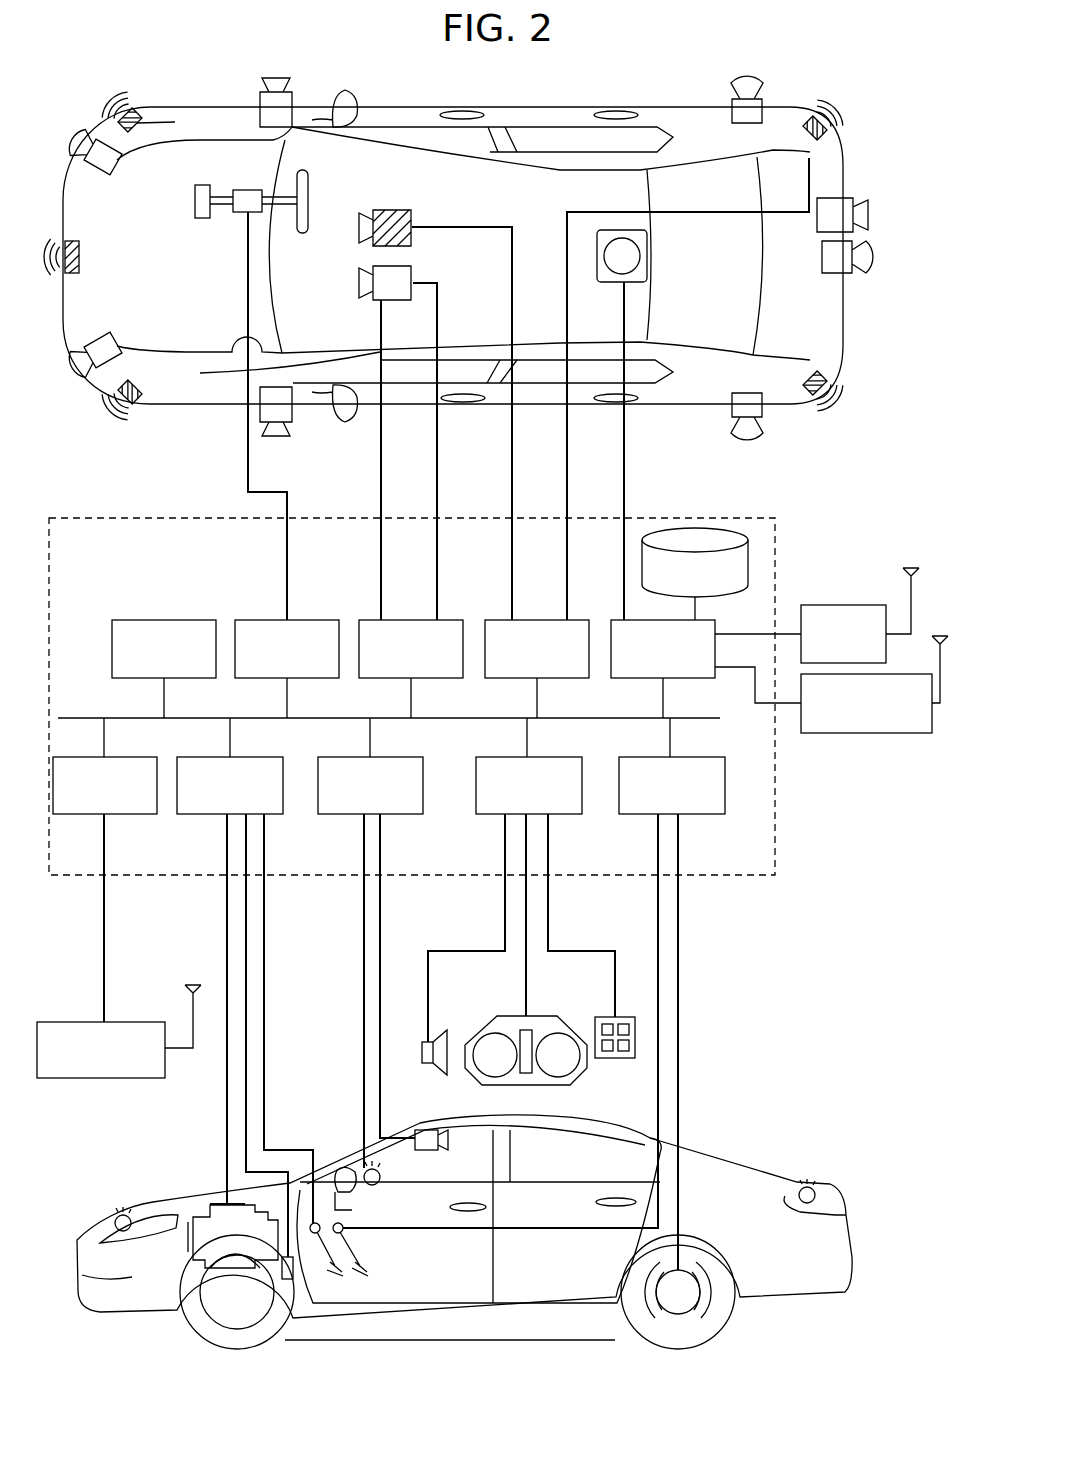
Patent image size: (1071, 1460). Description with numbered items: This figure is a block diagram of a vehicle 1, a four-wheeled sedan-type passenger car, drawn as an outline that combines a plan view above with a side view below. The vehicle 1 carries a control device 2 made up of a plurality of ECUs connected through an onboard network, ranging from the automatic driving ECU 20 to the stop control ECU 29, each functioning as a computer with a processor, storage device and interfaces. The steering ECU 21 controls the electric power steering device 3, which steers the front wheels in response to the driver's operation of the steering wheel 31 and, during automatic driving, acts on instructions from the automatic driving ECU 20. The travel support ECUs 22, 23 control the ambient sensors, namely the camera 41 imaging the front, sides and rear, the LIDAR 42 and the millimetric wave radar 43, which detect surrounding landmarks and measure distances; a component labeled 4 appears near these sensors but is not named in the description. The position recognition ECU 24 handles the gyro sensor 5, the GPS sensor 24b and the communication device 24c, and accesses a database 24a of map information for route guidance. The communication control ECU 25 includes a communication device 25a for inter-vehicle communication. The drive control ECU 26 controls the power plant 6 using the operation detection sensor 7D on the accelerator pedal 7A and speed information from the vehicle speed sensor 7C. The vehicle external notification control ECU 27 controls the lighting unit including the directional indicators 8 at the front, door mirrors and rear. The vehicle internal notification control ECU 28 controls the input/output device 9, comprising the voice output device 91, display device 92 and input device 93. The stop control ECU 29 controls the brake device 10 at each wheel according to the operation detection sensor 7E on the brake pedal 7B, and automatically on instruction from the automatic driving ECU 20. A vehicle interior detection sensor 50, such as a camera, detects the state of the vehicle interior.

The vehicle 1 is at (871, 168).
The control device 2 is at (737, 880).
The electric power steering device 3 is at (203, 219).
The steering wheel 31 is at (302, 234).
The external environment sensor group 4 is at (88, 112).
The camera 41 is at (258, 100).
The LIDAR 42 is at (113, 178).
The millimetric wave radar 43 is at (135, 132).
The gyro sensor 5 is at (648, 252).
The power plant 6 is at (198, 1215).
The accelerator pedal 7A is at (345, 1276).
The brake pedal 7B is at (370, 1262).
The vehicle speed sensor 7C is at (288, 1282).
The operation detection sensor 7D is at (316, 1222).
The operation detection sensor 7E is at (343, 1225).
The directional indicators 8 is at (113, 1220).
The input/output device 9 is at (522, 1054).
The voice output device 91 is at (420, 1045).
The display device 92 is at (470, 1043).
The input device 93 is at (625, 1060).
The brake device 10 is at (688, 1318).
The automatic driving ECU 20 is at (192, 618).
The steering ECU 21 is at (315, 618).
The travel support ECU 22 is at (405, 618).
The travel support ECU 23 is at (533, 618).
The position recognition ECU 24 is at (603, 618).
The database 24a is at (682, 528).
The GPS sensor 24b is at (832, 603).
The communication device 24c is at (826, 736).
The communication control ECU 25 is at (128, 816).
The communication device 25a is at (94, 1080).
The drive control ECU 26 is at (196, 816).
The vehicle external notification control ECU 27 is at (403, 816).
The vehicle internal notification control ECU 28 is at (561, 816).
The stop control ECU 29 is at (701, 816).
The vehicle interior detection sensor 50 is at (430, 1151).